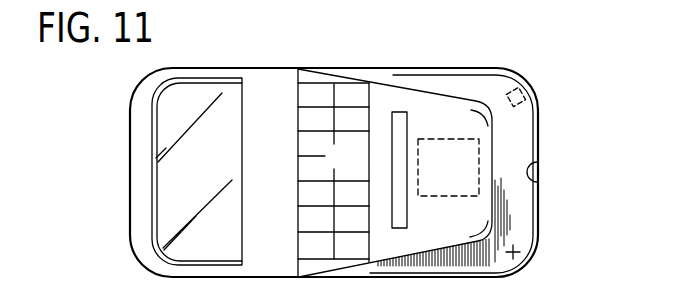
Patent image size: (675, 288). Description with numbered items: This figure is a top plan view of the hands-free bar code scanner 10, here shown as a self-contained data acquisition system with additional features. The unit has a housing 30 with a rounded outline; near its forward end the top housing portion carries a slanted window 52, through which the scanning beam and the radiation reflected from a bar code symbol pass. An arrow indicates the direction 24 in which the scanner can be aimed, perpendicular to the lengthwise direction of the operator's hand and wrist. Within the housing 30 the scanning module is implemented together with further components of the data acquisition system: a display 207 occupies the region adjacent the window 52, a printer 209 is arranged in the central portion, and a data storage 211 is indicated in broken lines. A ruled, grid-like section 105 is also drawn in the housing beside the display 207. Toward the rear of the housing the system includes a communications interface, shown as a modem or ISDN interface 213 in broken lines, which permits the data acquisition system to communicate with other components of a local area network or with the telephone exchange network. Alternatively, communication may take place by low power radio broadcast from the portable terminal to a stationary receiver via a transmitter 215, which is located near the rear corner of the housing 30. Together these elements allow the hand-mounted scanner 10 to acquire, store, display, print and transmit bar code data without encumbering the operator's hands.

The hands-free bar code scanner 10 is at (438, 60).
The direction 24 is at (277, 62).
The housing 30 is at (363, 168).
The slanted window 52 is at (210, 180).
The grid / keypad section 105 is at (322, 97).
The display 207 is at (260, 85).
The printer 209 is at (408, 125).
The data storage 211 is at (483, 158).
The ISDN interface 213 is at (531, 94).
The transmitter 215 is at (525, 242).